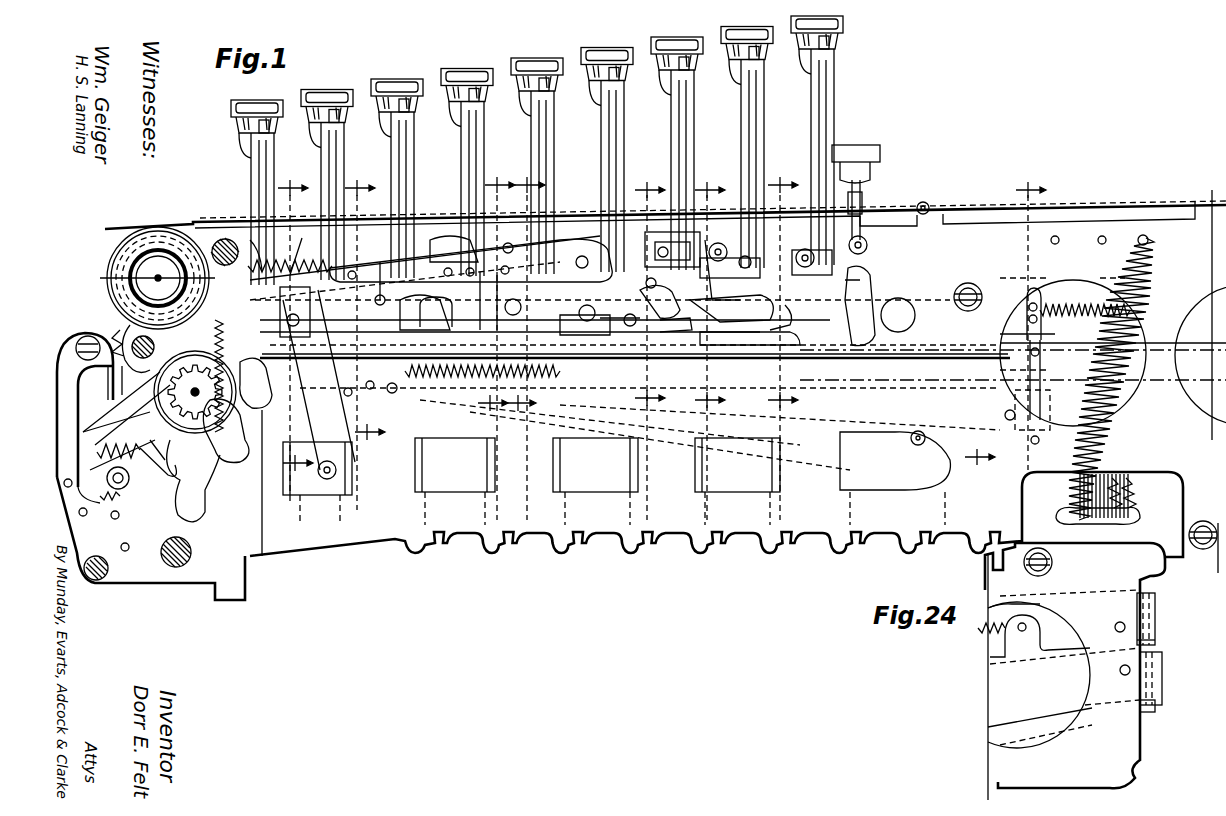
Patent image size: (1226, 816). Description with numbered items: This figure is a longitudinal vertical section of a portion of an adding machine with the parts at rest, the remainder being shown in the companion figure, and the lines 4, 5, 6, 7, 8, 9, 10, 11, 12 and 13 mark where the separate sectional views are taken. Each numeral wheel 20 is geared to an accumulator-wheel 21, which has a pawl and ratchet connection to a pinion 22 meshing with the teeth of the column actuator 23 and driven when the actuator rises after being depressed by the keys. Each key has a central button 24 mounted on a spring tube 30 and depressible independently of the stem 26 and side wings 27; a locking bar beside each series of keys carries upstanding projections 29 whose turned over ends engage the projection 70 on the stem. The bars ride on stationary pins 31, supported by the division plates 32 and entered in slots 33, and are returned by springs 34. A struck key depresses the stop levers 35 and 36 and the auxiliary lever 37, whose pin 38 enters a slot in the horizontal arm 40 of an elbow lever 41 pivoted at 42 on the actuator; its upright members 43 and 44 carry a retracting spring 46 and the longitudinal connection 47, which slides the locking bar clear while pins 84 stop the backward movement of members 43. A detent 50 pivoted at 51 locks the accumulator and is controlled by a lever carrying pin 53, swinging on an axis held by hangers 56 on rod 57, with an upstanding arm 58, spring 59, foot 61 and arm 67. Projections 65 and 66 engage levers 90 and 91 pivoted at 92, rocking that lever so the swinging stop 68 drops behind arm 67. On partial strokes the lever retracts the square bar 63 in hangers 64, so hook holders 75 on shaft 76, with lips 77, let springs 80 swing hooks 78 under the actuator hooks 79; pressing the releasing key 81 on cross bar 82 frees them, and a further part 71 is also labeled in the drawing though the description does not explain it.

In FIG. 1, the section line 4— 4 is at (120, 222).
In FIG. 1, the section line 5— 5 is at (89, 272).
In FIG. 1, the section line 6— 6 is at (295, 333).
In FIG. 1, the section line 7— 7 is at (365, 336).
In FIG. 1, the section line 8— 8 is at (496, 338).
In FIG. 1, the section line 9— 9 is at (525, 338).
In FIG. 1, the section line 10— 10 is at (649, 340).
In FIG. 1, the section line 11— 11 is at (710, 340).
In FIG. 1, the section line 12— 12 is at (783, 335).
In FIG. 1, the section line 13— 13 is at (1005, 325).
In FIG. 1, the numeral wheel 20 is at (163, 228).
In FIG. 1, the accumulator-wheel 21 is at (160, 455).
In FIG. 1, the pinion 22 is at (213, 392).
In FIG. 1, the column actuator 23 is at (240, 440).
In FIG. 24, the column actuator 23 is at (1162, 668).
In FIG. 1, the central button 24 is at (470, 80).
In FIG. 1, the stem 26 is at (494, 458).
In FIG. 1, the side wings 27 is at (445, 100).
In FIG. 1, the upstanding projections 29 is at (756, 322).
In FIG. 1, the spring tube 30 is at (765, 116).
In FIG. 1, the pins 31 is at (546, 398).
In FIG. 1, the division plates 32 is at (892, 520).
In FIG. 24, the division plates 32 is at (1152, 572).
In FIG. 1, the slots 33 is at (373, 396).
In FIG. 1, the springs 34 is at (472, 392).
In FIG. 1, the stop lever 35 is at (440, 394).
In FIG. 24, the stop lever 35 is at (1158, 640).
In FIG. 1, the stop lever 36 is at (306, 450).
In FIG. 24, the stop lever 36 is at (1158, 620).
In FIG. 1, the auxiliary lever 37 is at (905, 425).
In FIG. 24, the auxiliary lever 37 is at (1165, 688).
In FIG. 1, the laterally projecting pin 38 is at (1020, 450).
In FIG. 1, the horizontal arm 40 is at (1003, 381).
In FIG. 1, the elbow lever 41 is at (1107, 379).
In FIG. 1, the pivot 42 is at (1036, 436).
In FIG. 1, the upright member 43 is at (1041, 334).
In FIG. 1, the upright member 44 is at (1026, 326).
In FIG. 1, the retracting spring 46 is at (1085, 298).
In FIG. 24, the retracting spring 46 is at (985, 632).
In FIG. 1, the longitudinal connection 47 is at (1036, 286).
In FIG. 1, the detent 50 is at (136, 343).
In FIG. 1, the pivot 51 is at (248, 228).
In FIG. 1, the pin 53 is at (350, 270).
In FIG. 1, the swinging hangers 56 is at (462, 232).
In FIG. 1, the stationary rod or wire 57 is at (498, 245).
In FIG. 1, the upstanding arm 58 is at (447, 259).
In FIG. 1, the spring 59 is at (471, 258).
In FIG. 1, the foot 61 is at (633, 330).
In FIG. 1, the transverse square bar 63 is at (676, 332).
In FIG. 1, the swinging hangers 64 is at (648, 234).
In FIG. 1, the upward projection 65 is at (429, 297).
In FIG. 1, the upward projection 66 is at (375, 269).
In FIG. 1, the upstanding arm 67 is at (508, 242).
In FIG. 1, the swinging stop 68 is at (560, 232).
In FIG. 1, the projection 70 is at (876, 296).
In FIG. 1, the stud 71 is at (800, 250).
In FIG. 1, the hook holders 75 is at (706, 238).
In FIG. 1, the shaft 76 is at (730, 246).
In FIG. 1, the lips 77 is at (743, 246).
In FIG. 1, the hook 78 is at (794, 313).
In FIG. 1, the upstanding hook 79 is at (731, 302).
In FIG. 1, the spring 80 is at (661, 289).
In FIG. 1, the releasing key 81 is at (872, 152).
In FIG. 1, the cross bar 82 is at (868, 247).
In FIG. 1, the pins 84 is at (1035, 363).
In FIG. 1, the lever 90 is at (422, 262).
In FIG. 1, the lever 91 is at (397, 400).
In FIG. 1, the pivot 92 is at (290, 256).